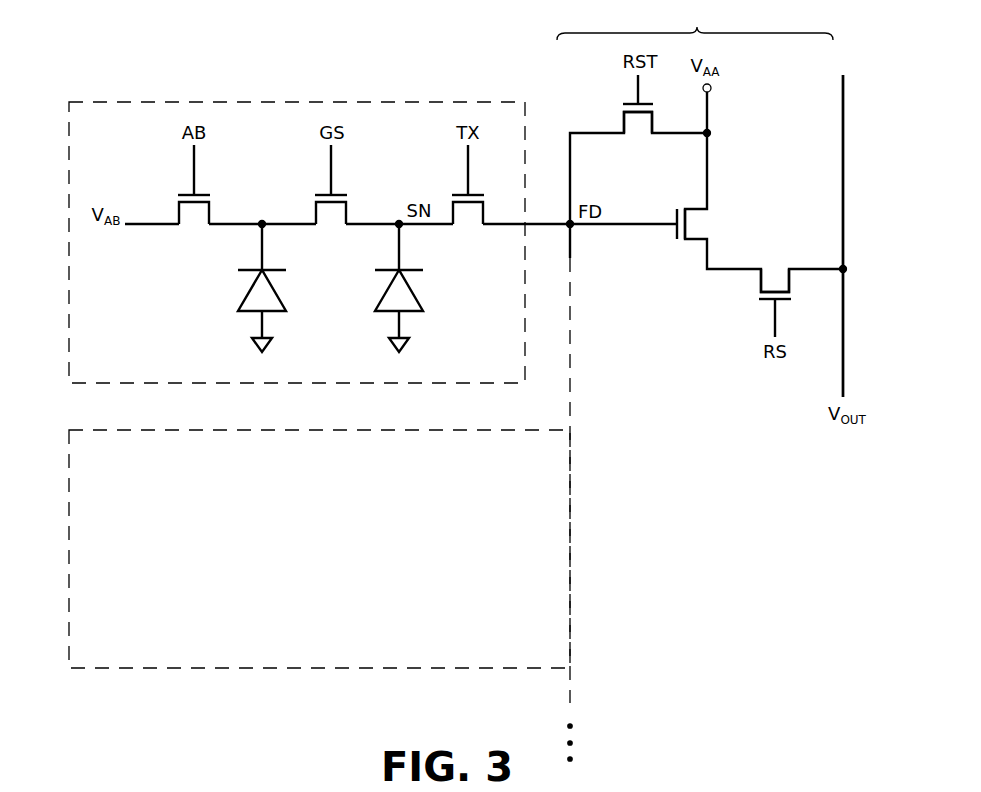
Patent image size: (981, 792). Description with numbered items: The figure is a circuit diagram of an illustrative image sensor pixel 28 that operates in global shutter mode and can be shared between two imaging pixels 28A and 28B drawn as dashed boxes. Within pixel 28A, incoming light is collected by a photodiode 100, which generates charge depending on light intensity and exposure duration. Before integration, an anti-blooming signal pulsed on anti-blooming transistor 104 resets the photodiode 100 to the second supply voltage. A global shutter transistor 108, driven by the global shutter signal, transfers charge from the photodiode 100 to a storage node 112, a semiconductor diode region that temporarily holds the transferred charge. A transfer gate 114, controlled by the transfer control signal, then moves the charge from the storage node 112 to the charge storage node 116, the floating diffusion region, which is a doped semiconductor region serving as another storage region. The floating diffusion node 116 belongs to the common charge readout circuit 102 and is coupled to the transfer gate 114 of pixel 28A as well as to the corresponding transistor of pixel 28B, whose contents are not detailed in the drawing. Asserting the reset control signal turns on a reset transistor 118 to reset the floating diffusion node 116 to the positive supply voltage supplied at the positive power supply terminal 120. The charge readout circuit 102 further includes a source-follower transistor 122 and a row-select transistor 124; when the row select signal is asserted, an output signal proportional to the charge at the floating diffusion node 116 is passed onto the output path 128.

The image sensor pixel 28 is at (112, 34).
The imaging pixel 28A is at (150, 101).
The imaging pixel 28B is at (148, 430).
The photodiode 100 is at (258, 293).
The charge readout circuit 102 is at (695, 21).
The anti-blooming transistor 104 is at (194, 226).
The global shutter transistor 108 is at (331, 226).
The storage node 112 is at (398, 222).
The transfer gate 114 is at (468, 226).
The charge storage node 116 is at (573, 227).
The reset transistor 118 is at (638, 128).
The positive power supply terminal 120 is at (712, 89).
The source-follower transistor 122 is at (703, 227).
The row-select transistor 124 is at (775, 276).
The output path 128 is at (843, 352).